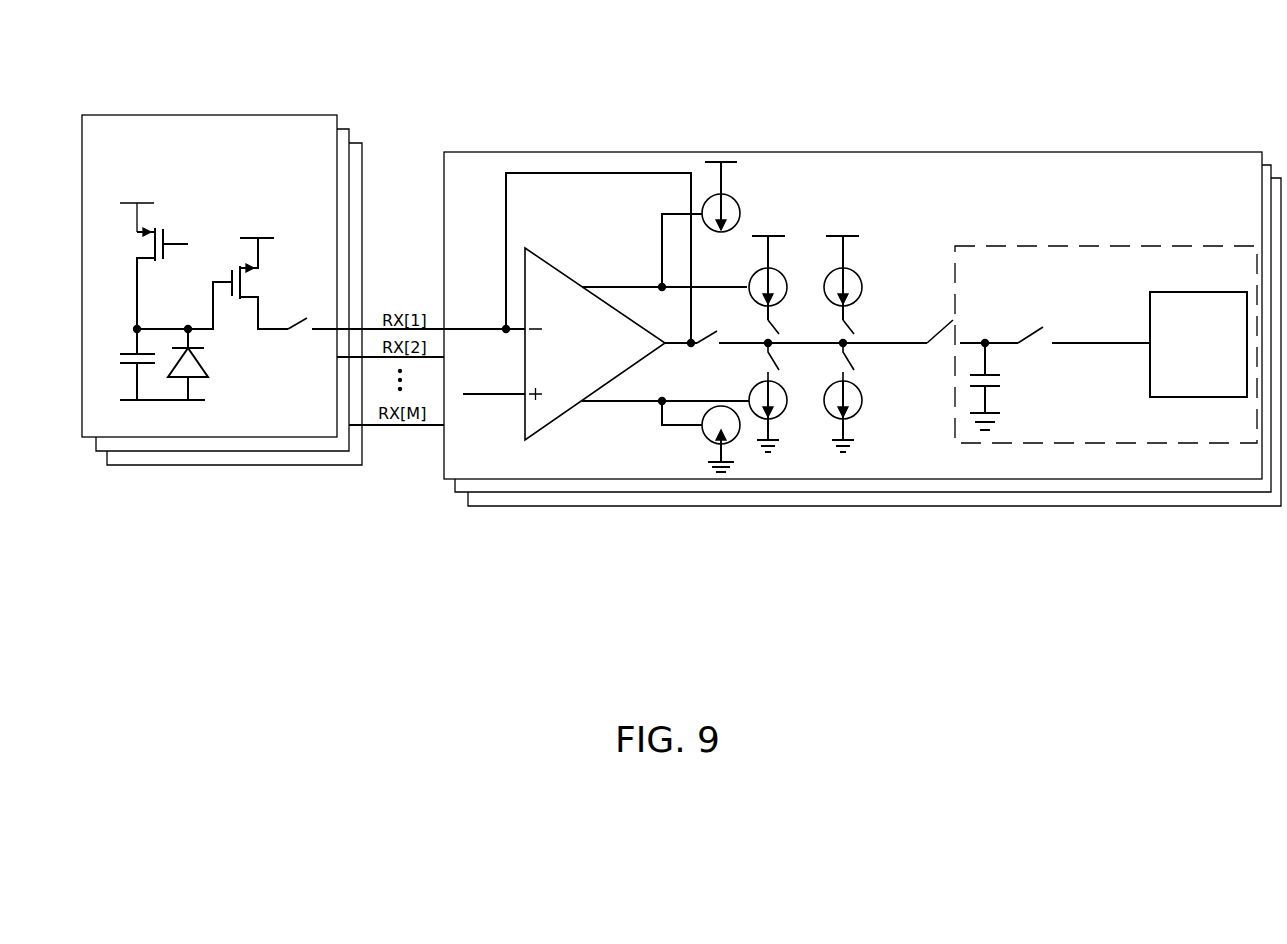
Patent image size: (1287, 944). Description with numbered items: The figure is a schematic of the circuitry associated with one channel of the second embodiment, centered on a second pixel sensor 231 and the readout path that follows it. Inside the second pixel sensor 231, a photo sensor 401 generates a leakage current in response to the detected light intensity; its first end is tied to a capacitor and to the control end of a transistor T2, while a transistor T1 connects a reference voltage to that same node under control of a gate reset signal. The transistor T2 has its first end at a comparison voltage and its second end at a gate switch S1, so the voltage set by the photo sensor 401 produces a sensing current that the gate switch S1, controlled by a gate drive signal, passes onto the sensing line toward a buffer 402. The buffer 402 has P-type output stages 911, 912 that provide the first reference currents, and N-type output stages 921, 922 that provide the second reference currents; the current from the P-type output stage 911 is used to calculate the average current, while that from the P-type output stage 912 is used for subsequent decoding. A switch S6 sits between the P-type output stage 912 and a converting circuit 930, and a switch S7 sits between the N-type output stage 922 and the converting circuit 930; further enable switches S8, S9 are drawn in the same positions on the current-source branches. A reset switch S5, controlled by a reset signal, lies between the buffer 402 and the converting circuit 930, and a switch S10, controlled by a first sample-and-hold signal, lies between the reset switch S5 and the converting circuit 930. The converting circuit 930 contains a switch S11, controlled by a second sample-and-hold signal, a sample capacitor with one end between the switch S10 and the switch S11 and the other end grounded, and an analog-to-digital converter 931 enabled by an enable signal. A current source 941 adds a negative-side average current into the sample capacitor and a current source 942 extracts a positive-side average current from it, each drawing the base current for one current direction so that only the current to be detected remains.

The second pixel sensor 231 is at (172, 115).
The photo sensor 401 is at (206, 369).
The buffer 402 is at (545, 257).
The P-type output stage 911 is at (703, 197).
The P-type output stage 912 is at (750, 279).
The N-type output stage 921 is at (708, 444).
The N-type output stage 922 is at (755, 414).
The current source 941 is at (831, 279).
The current source 942 is at (830, 427).
The converting circuit 930 is at (1030, 244).
The analog-to-digital converter 931 is at (1182, 291).
The transistor T1 is at (143, 231).
The transistor T2 is at (246, 268).
The gate switch S1 is at (290, 336).
The reset switch S5 is at (695, 349).
The switch S6 is at (764, 322).
The switch S7 is at (765, 358).
The switch S8 is at (849, 321).
The switch S9 is at (846, 360).
The switch S10 is at (927, 340).
The switch S11 is at (1034, 338).